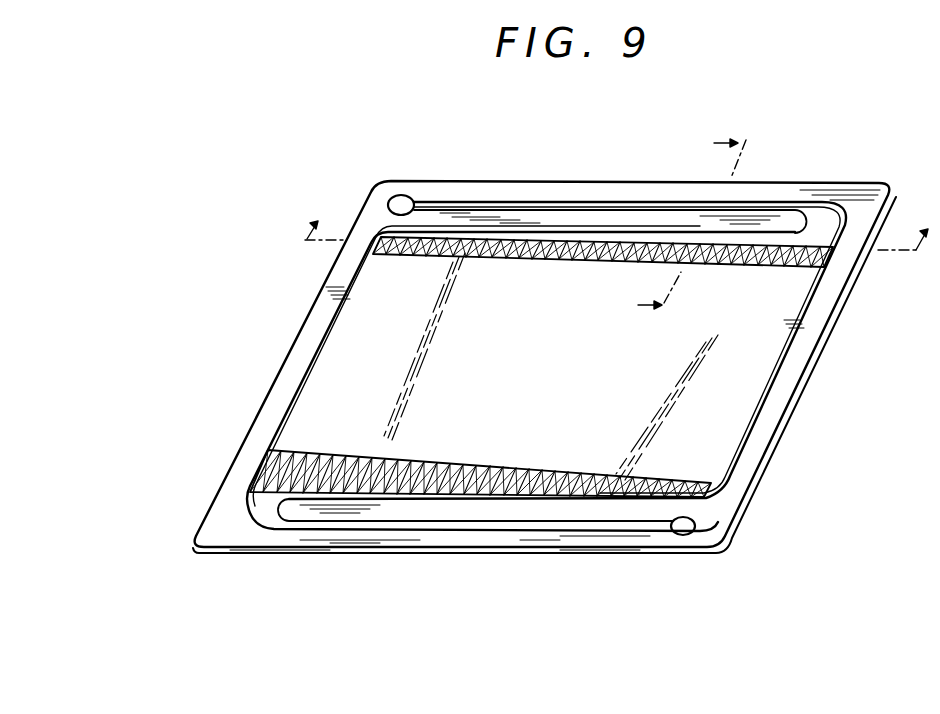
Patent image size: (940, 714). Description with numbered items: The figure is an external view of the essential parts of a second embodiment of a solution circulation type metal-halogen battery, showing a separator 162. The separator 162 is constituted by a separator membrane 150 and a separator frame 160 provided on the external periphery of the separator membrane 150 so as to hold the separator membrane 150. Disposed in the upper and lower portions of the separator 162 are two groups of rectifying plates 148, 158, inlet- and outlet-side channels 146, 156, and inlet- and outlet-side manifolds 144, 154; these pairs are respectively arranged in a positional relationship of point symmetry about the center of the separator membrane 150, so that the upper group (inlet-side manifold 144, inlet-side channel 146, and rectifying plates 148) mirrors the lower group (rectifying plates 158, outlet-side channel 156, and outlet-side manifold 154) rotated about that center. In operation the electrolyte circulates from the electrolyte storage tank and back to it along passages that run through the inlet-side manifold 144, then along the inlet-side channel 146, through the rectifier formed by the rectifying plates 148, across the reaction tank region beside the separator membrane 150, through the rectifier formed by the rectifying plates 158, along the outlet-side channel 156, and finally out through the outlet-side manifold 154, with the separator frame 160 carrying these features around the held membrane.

The inlet-side manifold 144 is at (401, 196).
The inlet-side channel 146 is at (602, 201).
The rectifying plates 148 is at (766, 268).
The separator membrane 150 is at (540, 371).
The outlet-side manifold 154 is at (683, 535).
The outlet-side channel 156 is at (500, 528).
The rectifying plates 158 is at (362, 494).
The separator frame 160 is at (760, 429).
The separator 162 is at (563, 363).